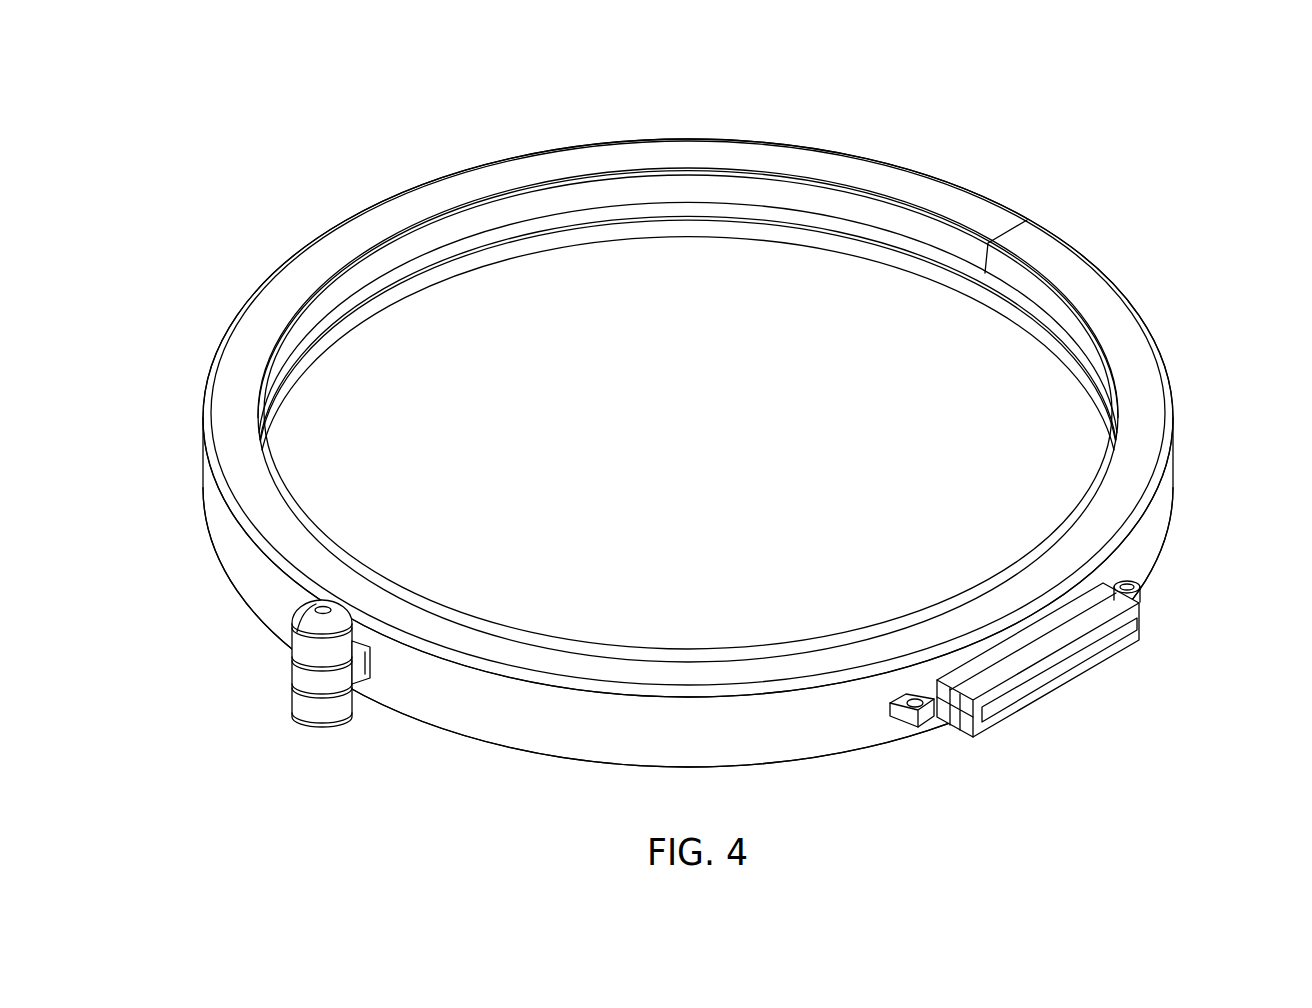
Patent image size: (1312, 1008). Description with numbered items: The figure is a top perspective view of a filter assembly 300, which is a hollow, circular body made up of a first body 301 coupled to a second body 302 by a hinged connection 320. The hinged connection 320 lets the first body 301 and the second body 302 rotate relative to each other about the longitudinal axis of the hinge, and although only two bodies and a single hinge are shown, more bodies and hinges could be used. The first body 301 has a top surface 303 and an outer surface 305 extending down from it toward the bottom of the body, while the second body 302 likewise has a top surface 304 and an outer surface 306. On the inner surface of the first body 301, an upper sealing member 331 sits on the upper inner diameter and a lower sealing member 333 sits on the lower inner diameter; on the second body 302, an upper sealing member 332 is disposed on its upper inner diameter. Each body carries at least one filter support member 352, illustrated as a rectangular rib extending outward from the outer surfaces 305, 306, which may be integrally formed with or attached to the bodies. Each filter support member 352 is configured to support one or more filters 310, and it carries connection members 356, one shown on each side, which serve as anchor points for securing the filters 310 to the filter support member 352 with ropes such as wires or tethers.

The filter assembly 300 is at (702, 439).
The first body 301 is at (588, 140).
The second body 302 is at (1182, 391).
The top surface 303 is at (768, 150).
The top surface 304 is at (1127, 463).
The outer surface 305 is at (255, 573).
The outer surface 306 is at (1155, 527).
The filter 310 is at (1170, 643).
The hinged connection 320 is at (324, 744).
The upper sealing member 331 is at (600, 202).
The upper sealing member 332 is at (952, 583).
The lower sealing member 333 is at (500, 253).
The filter support member 352 is at (948, 730).
The connection member 356 is at (918, 725).